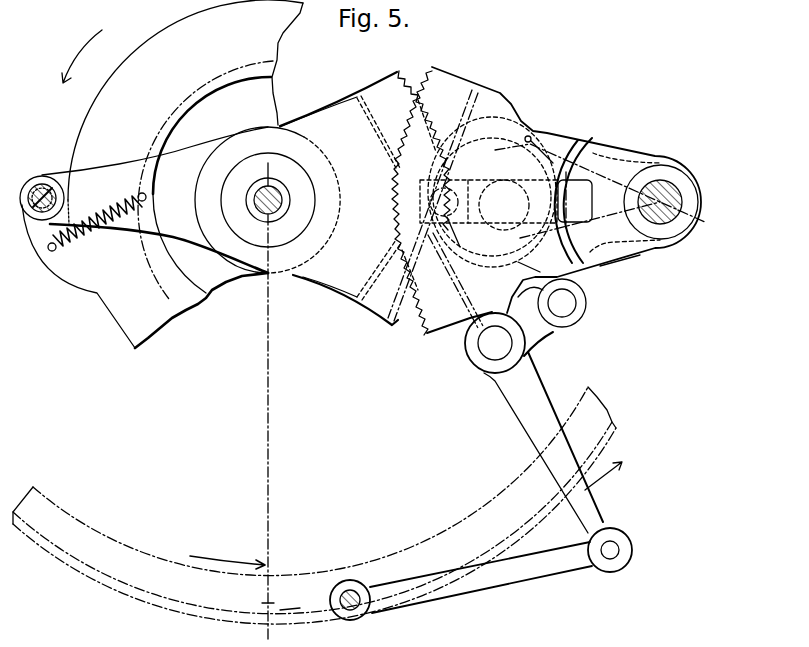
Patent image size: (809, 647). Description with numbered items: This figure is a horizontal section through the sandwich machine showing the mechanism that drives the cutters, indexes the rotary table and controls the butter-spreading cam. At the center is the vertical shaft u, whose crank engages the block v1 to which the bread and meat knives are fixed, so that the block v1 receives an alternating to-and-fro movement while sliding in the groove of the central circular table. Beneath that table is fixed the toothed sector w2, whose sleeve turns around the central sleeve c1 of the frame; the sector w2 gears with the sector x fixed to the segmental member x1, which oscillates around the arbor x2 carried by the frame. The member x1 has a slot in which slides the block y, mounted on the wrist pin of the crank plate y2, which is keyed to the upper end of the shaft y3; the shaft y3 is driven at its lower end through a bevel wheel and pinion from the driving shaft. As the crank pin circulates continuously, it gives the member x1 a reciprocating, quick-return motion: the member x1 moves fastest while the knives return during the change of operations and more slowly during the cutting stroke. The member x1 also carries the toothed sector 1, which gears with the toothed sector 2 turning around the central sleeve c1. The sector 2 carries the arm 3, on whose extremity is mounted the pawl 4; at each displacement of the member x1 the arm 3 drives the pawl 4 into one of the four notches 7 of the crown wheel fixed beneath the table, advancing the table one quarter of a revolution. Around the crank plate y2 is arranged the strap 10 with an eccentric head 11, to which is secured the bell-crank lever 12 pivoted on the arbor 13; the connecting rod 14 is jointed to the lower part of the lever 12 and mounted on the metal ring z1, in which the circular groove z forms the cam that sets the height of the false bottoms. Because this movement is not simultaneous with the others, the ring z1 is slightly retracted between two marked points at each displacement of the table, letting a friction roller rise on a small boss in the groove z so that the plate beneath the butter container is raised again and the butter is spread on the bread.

The toothed sector 1 is at (564, 210).
The toothed sector 2 is at (350, 102).
The arm 3 is at (144, 200).
The pawl 4 is at (62, 277).
The notches 7 is at (188, 17).
The strap 10 is at (473, 284).
The eccentric head 11 is at (562, 279).
The bell-crank lever 12 is at (543, 442).
The arbor 13 is at (495, 343).
The connecting rod 14 is at (481, 574).
The vertical shaft u is at (275, 214).
The toothed sector w2 is at (414, 97).
The sector x is at (465, 295).
The segmental member x1 is at (624, 255).
The arbor x2 is at (689, 235).
The block y is at (468, 182).
The crank plate y2 is at (488, 192).
The shaft y3 is at (504, 205).
The block v1 is at (462, 222).
The central sleeve c1 is at (539, 143).
The circular groove z is at (529, 269).
The metal ring z1 is at (317, 505).